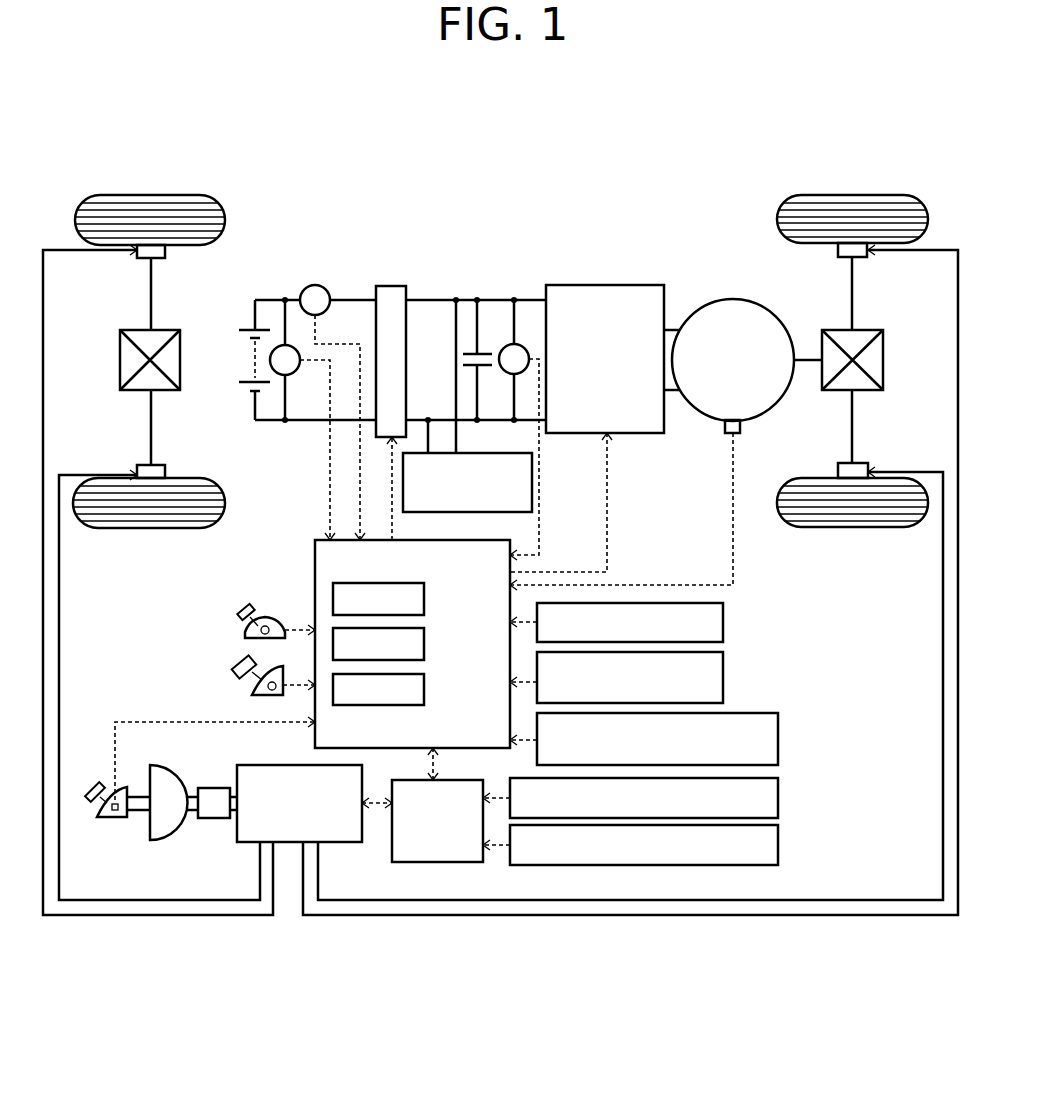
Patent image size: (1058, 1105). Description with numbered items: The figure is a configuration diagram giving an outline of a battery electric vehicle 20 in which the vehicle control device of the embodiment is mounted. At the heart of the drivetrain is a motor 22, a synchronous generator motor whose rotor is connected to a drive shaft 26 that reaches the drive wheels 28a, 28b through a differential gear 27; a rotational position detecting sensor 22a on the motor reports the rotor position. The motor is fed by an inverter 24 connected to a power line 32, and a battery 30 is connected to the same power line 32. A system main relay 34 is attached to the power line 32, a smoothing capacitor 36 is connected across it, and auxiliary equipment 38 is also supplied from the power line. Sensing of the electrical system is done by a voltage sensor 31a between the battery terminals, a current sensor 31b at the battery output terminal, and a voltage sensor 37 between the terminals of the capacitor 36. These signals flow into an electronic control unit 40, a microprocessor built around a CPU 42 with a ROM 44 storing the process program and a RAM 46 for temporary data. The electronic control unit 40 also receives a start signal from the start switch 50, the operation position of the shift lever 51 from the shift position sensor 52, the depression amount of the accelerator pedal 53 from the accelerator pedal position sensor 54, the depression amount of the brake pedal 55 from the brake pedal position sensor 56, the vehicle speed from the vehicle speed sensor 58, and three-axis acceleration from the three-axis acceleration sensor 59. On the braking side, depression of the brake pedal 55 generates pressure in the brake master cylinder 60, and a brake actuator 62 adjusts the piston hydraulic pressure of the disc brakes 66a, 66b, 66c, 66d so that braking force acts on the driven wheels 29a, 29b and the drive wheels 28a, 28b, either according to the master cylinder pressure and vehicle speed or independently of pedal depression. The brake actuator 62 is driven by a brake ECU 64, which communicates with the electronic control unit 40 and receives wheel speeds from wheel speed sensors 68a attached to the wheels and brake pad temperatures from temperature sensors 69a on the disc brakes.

The battery electric vehicle 20 is at (542, 166).
The motor 22 is at (732, 299).
The rotational position detecting sensor 22a is at (725, 423).
The inverter 24 is at (607, 285).
The drive shaft 26 is at (807, 357).
The differential gear 27 is at (867, 330).
The drive wheel 28a is at (852, 195).
The drive wheel 28b is at (853, 527).
The driven wheel 29a is at (152, 195).
The driven wheel 29b is at (152, 528).
The battery 30 is at (247, 327).
The voltage sensor 31a is at (285, 375).
The current sensor 31b is at (315, 285).
The power line 32 is at (435, 298).
The system main relay 34 is at (390, 285).
The smoothing capacitor 36 is at (485, 352).
The voltage sensor 37 is at (512, 347).
The auxiliary equipment 38 is at (465, 453).
The electronic control unit 40 is at (412, 631).
The CPU 42 is at (424, 600).
The ROM 44 is at (424, 645).
The RAM 46 is at (424, 690).
The start switch 50 is at (723, 623).
The shift lever 51 is at (243, 618).
The shift position sensor 52 is at (248, 628).
The accelerator pedal 53 is at (232, 662).
The accelerator pedal position sensor 54 is at (250, 687).
The brake pedal 55 is at (98, 785).
The brake pedal position sensor 56 is at (115, 817).
The vehicle speed sensor 58 is at (723, 684).
The three-axis acceleration sensor 59 is at (778, 742).
The brake master cylinder 60 is at (215, 818).
The brake actuator 62 is at (260, 765).
The brake ECU 64 is at (440, 862).
The disc brake 66a is at (838, 255).
The disc brake 66b is at (838, 472).
The disc brake 66c is at (165, 255).
The disc brake 66d is at (168, 470).
The wheel speed sensor 68a is at (778, 798).
The temperature sensor 69a is at (778, 845).